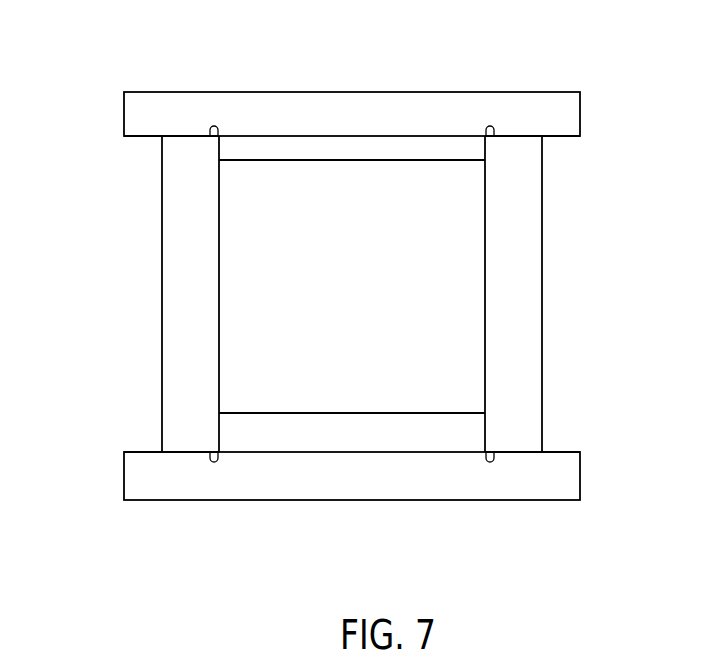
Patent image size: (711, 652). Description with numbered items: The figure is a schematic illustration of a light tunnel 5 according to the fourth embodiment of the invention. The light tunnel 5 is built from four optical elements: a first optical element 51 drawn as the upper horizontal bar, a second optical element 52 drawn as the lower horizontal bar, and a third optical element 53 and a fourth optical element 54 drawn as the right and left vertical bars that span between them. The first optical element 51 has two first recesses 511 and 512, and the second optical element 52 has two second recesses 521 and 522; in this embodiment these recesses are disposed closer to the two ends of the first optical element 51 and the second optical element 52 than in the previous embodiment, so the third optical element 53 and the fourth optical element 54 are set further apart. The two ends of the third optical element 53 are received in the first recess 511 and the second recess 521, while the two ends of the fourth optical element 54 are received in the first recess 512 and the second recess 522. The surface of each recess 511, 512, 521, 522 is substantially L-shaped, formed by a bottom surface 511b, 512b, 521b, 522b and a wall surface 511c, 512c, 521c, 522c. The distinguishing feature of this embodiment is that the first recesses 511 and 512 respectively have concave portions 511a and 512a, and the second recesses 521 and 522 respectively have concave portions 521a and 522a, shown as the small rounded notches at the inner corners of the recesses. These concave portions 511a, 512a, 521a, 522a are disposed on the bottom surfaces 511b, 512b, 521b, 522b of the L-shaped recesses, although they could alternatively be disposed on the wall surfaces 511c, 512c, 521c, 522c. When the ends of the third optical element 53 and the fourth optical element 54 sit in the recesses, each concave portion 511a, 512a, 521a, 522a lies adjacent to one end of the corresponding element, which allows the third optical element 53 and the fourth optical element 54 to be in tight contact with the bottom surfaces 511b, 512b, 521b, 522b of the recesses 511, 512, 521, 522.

The light tunnel 5 is at (16, 41).
The first optical element 51 is at (355, 118).
The second optical element 52 is at (364, 473).
The third optical element 53 is at (517, 293).
The fourth optical element 54 is at (190, 285).
The first recess 511 is at (562, 137).
The concave portion 511a is at (489, 127).
The bottom surface 511b is at (523, 136).
The wall surface 511c is at (488, 150).
The first recess 512 is at (150, 136).
The concave portion 512a is at (213, 129).
The bottom surface 512b is at (186, 133).
The wall surface 512c is at (222, 150).
The second recess 521 is at (557, 452).
The concave portion 521a is at (488, 458).
The bottom surface 521b is at (522, 455).
The wall surface 521c is at (487, 430).
The second recess 522 is at (136, 452).
The concave portion 522a is at (214, 460).
The bottom surface 522b is at (187, 453).
The wall surface 522c is at (222, 430).